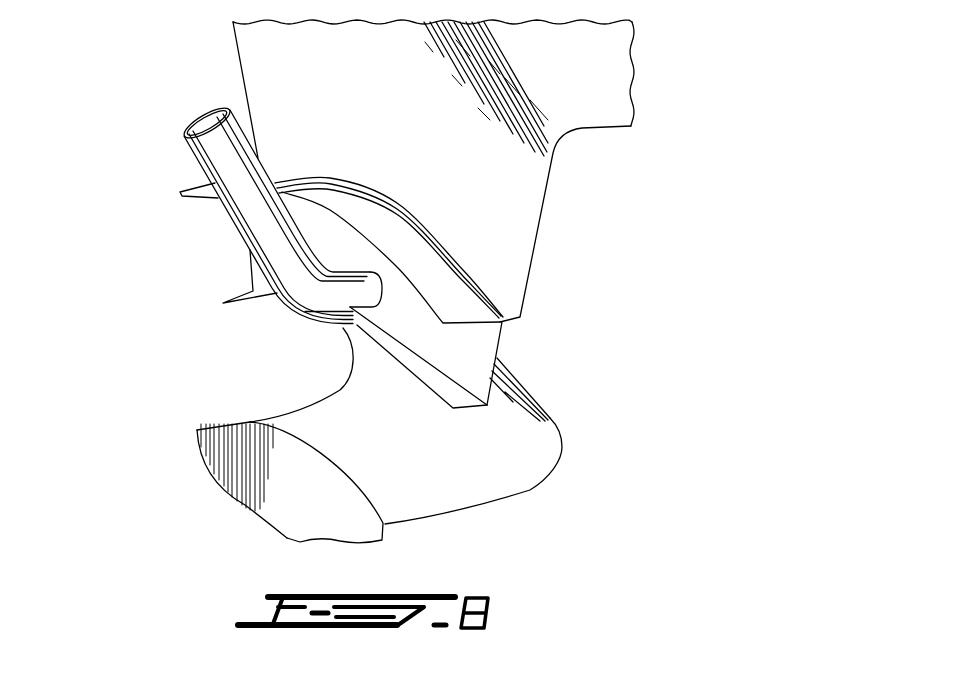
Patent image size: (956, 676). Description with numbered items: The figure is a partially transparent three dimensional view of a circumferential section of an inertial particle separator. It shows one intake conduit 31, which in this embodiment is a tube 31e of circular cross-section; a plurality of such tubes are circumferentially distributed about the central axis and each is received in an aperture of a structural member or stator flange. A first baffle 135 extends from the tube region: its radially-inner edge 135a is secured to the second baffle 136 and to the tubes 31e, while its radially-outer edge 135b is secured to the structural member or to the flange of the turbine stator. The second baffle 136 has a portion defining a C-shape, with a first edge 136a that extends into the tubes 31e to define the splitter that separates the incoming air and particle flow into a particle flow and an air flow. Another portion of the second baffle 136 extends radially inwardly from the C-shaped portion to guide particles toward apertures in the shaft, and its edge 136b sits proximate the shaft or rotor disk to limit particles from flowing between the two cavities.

The intake conduit 31 is at (205, 121).
The tube 31e is at (213, 162).
The first baffle 135 is at (498, 358).
The radially-inner edge 135a is at (487, 405).
The radially-outer edge 135b is at (500, 312).
The second baffle 136 is at (532, 488).
The first edge 136a is at (423, 373).
The edge 136b is at (268, 523).